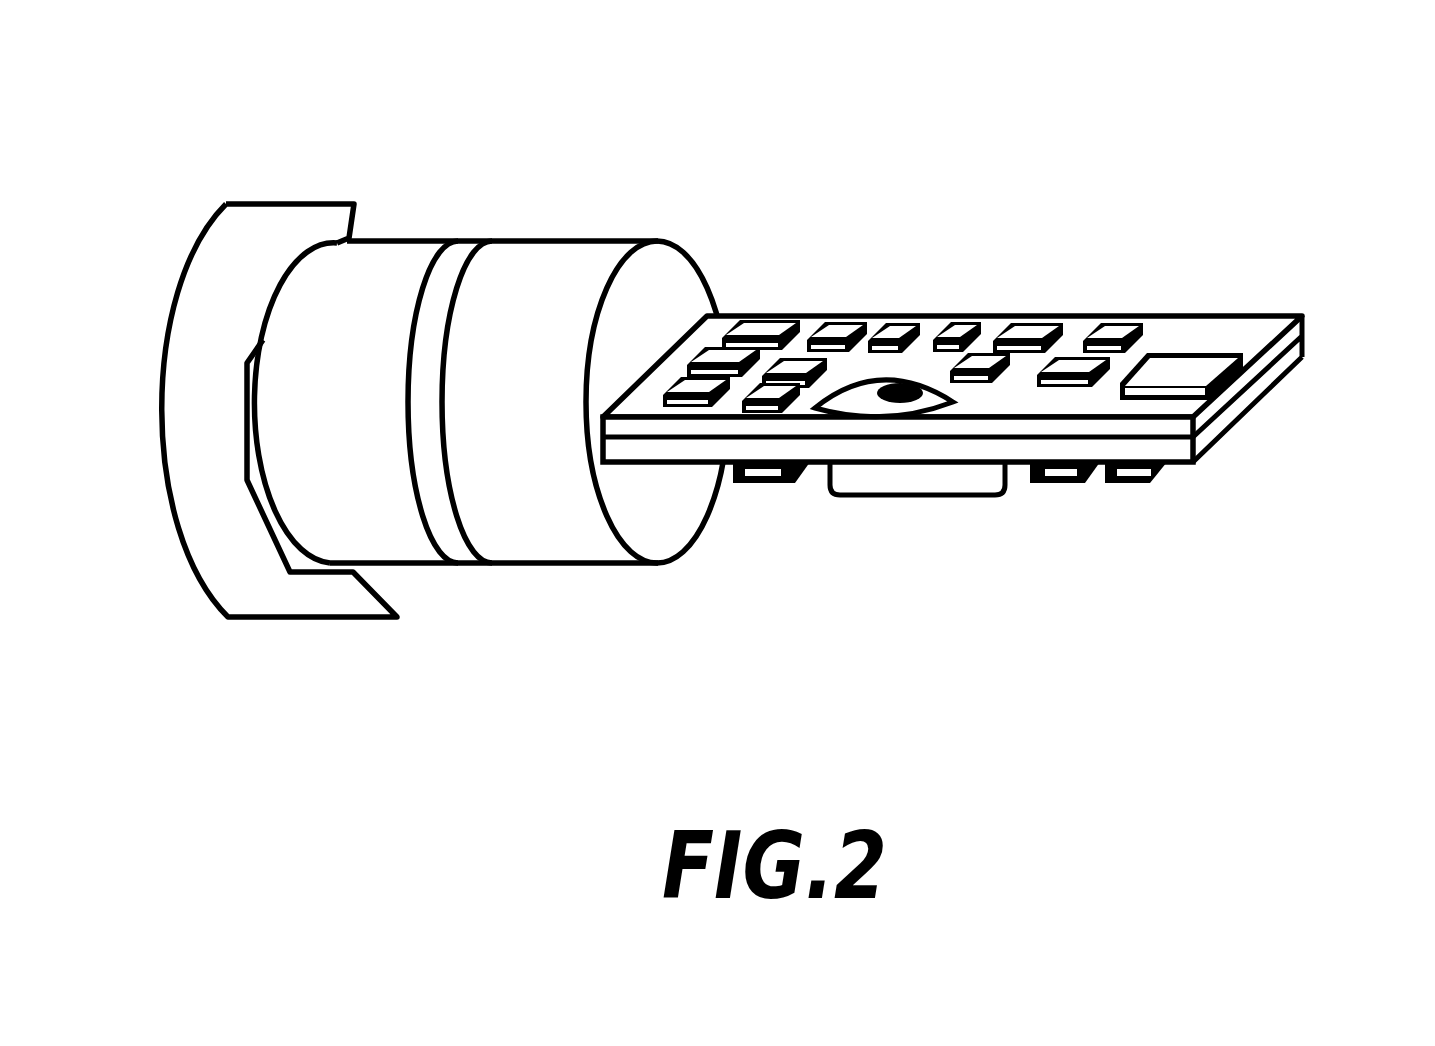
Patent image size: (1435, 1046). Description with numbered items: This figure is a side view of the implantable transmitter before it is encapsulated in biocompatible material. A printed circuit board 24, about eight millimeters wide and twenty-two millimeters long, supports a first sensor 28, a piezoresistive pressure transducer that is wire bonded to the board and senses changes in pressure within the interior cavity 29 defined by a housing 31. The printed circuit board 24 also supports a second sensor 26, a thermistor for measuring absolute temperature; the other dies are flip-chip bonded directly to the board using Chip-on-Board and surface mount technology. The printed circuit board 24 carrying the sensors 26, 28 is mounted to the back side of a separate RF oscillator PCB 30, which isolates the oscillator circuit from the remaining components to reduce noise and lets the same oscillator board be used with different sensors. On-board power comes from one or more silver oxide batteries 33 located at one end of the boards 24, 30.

The printed circuit board 24 is at (1268, 325).
The second sensor 26 is at (880, 385).
The first sensor 28 is at (765, 328).
The interior cavity 29 is at (424, 604).
The RF oscillator PCB 30 is at (1080, 480).
The housing 31 is at (283, 588).
The silver oxide batteries 33 is at (503, 262).